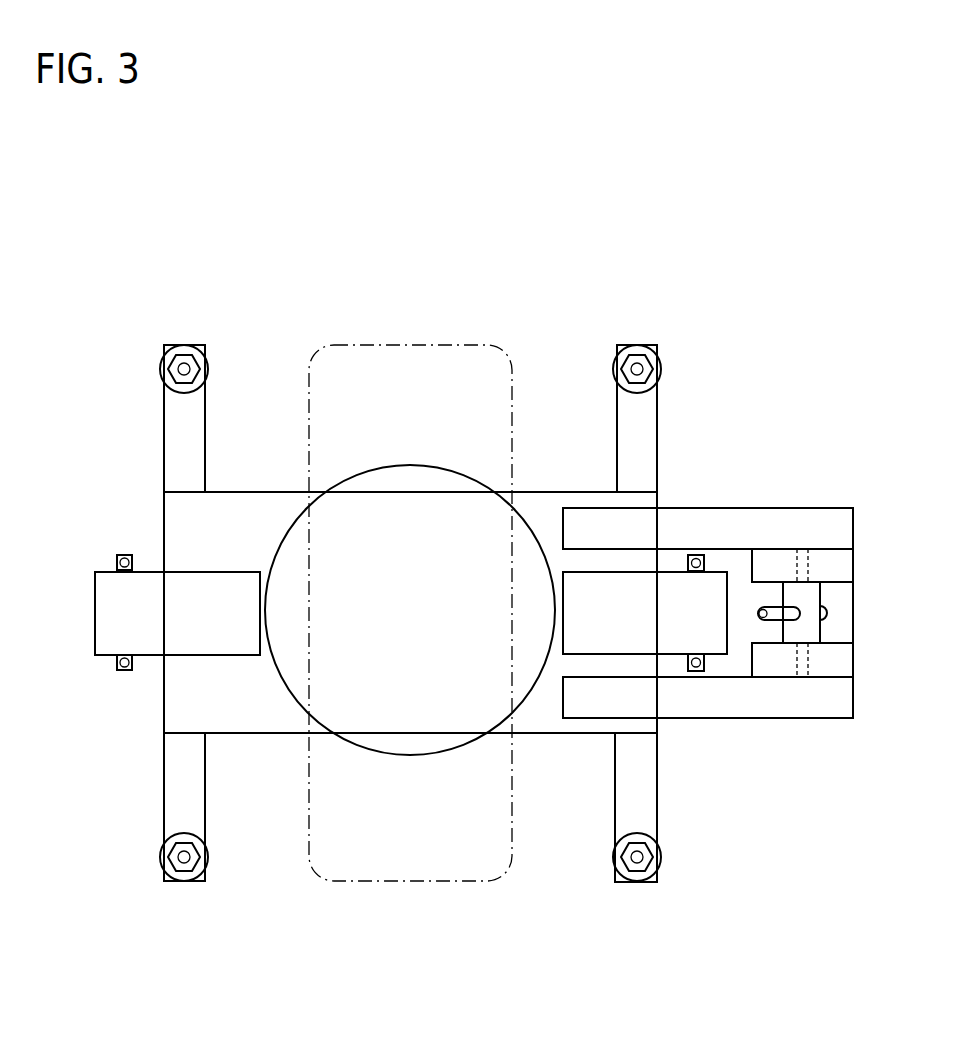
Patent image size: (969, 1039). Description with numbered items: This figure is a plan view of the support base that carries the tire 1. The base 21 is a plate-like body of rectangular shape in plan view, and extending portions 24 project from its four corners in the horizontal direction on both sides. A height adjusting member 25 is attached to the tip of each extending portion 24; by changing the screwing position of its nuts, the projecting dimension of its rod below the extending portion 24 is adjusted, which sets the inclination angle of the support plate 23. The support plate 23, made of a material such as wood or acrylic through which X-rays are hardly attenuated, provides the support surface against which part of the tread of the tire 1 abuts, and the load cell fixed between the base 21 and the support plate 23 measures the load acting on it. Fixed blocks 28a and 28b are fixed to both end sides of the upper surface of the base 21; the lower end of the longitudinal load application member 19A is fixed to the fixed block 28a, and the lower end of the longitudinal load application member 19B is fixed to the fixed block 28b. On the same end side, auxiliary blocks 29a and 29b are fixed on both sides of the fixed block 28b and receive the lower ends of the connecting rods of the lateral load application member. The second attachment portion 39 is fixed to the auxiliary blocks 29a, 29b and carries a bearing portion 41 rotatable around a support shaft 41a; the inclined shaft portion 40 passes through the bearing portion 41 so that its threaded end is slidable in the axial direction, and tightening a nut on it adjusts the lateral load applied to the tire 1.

The tire 1 is at (410, 345).
The base 21 is at (262, 492).
The support plate 23 is at (290, 680).
The extending portion 24 is at (173, 448).
The height adjusting member 25 is at (163, 366).
The fixed block 28a is at (123, 611).
The fixed block 28b is at (635, 581).
The longitudinal load application member 19A is at (124, 555).
The longitudinal load application member 19B is at (695, 554).
The auxiliary block 29a is at (728, 702).
The auxiliary block 29b is at (758, 513).
The second attachment portion 39 is at (828, 668).
The inclined shaft portion 40 is at (828, 617).
The bearing portion 41 is at (815, 590).
The support shaft 41a is at (803, 548).